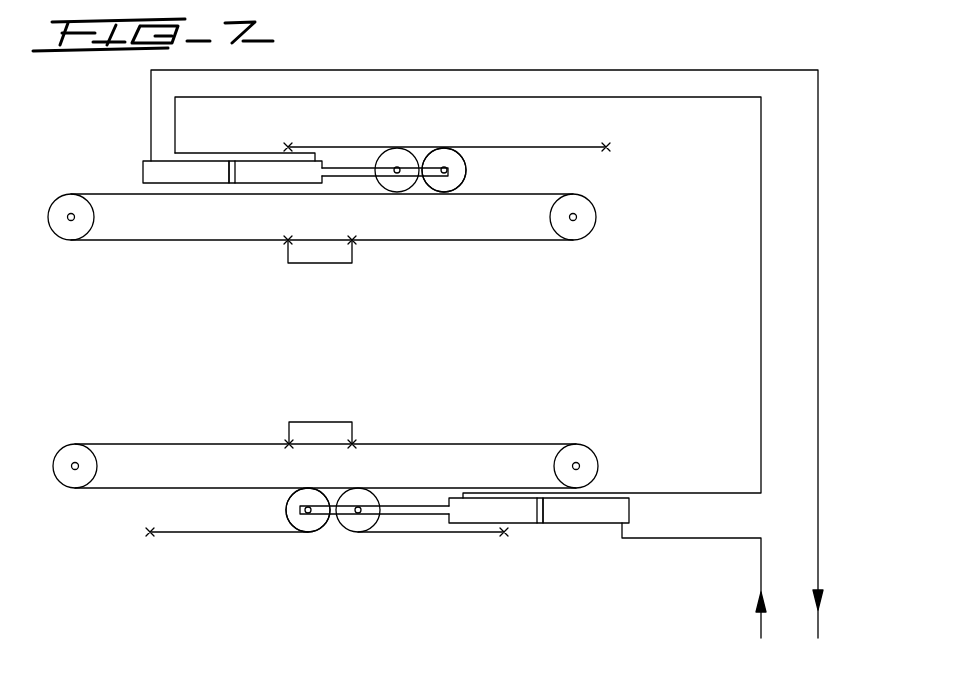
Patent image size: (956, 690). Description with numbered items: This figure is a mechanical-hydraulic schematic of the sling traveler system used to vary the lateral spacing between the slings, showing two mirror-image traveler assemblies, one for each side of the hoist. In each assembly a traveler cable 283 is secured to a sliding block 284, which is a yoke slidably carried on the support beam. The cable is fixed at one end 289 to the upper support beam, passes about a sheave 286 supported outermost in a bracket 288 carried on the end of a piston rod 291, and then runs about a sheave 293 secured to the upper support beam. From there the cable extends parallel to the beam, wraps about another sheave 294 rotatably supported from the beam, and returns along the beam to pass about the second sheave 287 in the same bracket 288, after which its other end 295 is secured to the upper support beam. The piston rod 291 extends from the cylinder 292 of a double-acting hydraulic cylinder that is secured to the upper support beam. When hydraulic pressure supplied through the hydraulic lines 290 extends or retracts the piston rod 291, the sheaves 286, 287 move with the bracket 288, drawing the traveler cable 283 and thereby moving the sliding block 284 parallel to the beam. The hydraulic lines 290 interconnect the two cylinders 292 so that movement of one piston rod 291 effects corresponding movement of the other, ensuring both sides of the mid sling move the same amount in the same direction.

The traveler cable 283 is at (480, 147).
The sliding block 284 is at (352, 252).
The sheave 286 is at (467, 168).
The sheave 287 is at (376, 156).
The bracket 288 is at (420, 164).
The end of traveler cable 289 is at (606, 148).
The hydraulic lines 290 is at (724, 458).
The piston rod 291 is at (352, 177).
The cylinder 292 is at (189, 173).
The sheave 293 is at (592, 224).
The sheave 294 is at (80, 231).
The other end of traveler cable 295 is at (288, 147).